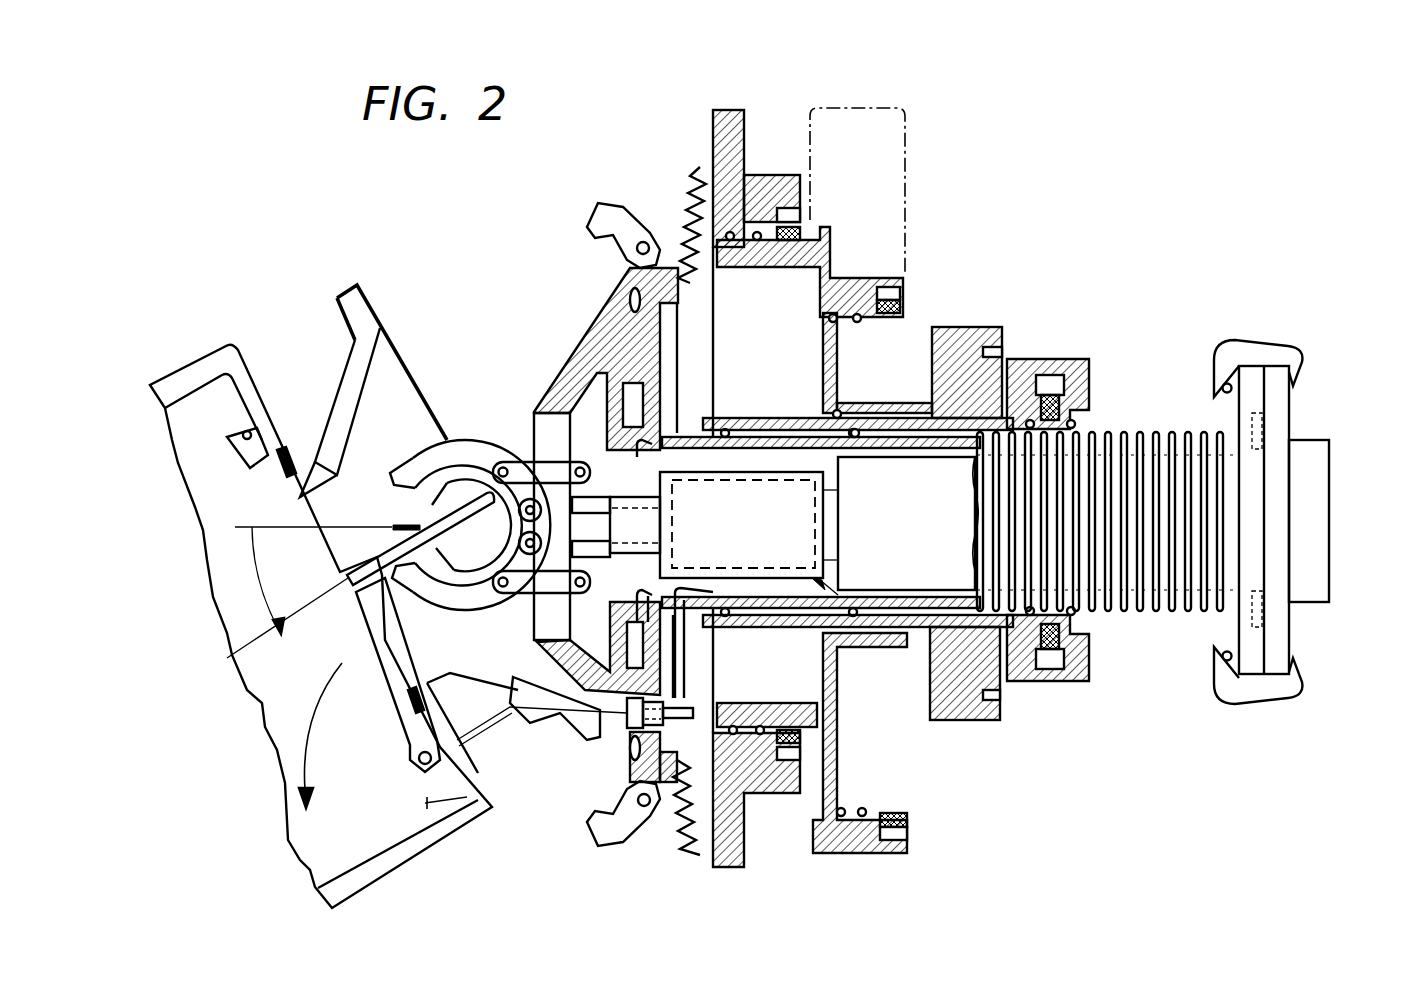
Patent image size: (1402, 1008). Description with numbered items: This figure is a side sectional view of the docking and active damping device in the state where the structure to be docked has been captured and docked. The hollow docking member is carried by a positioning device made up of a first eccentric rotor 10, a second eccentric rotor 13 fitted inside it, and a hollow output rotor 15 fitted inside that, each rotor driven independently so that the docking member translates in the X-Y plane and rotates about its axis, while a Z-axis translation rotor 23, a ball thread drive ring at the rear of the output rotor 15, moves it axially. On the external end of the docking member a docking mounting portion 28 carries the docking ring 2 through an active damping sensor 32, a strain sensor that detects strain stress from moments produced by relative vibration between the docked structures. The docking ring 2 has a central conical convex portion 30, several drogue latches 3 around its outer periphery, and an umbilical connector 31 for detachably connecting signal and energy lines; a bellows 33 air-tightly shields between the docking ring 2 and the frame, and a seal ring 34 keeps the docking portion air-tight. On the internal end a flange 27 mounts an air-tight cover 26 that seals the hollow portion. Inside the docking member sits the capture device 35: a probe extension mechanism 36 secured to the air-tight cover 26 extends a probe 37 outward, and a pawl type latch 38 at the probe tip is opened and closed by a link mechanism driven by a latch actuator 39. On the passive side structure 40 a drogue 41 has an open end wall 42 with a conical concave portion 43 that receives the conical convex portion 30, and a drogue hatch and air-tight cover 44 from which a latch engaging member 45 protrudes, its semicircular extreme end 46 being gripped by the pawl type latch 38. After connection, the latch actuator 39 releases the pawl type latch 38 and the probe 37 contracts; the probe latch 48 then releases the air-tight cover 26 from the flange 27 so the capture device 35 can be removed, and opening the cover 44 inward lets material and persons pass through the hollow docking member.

The docking ring 2 is at (607, 367).
The drogue latch 3 is at (618, 225).
The first eccentric rotor 10 is at (880, 284).
The second eccentric rotor 13 is at (944, 328).
The output rotor 15 is at (1012, 690).
The Z-axis translation rotor 23 is at (1088, 665).
The air-tight cover 26 is at (1293, 637).
The flange 27 is at (1236, 404).
The docking mounting portion 28 is at (665, 650).
The conical convex portion 30 is at (613, 337).
The umbilical connector 31 is at (628, 725).
The active damping sensor 32 is at (623, 390).
The bellows 33 is at (698, 167).
The seal ring 34 is at (630, 296).
The capture device 35 is at (850, 642).
The probe extension mechanism 36 is at (918, 577).
The probe 37 is at (636, 498).
The pawl type latch 38 is at (484, 443).
The latch actuator 39 is at (749, 533).
The passive side structure 40 is at (307, 850).
The drogue 41 is at (315, 462).
The open end wall 42 is at (371, 298).
The conical concave portion 43 is at (352, 413).
The drogue hatch and air-tight cover 44 is at (357, 635).
The latch engaging member 45 is at (380, 580).
The extreme end 46 is at (428, 508).
The probe latch 48 is at (1240, 348).